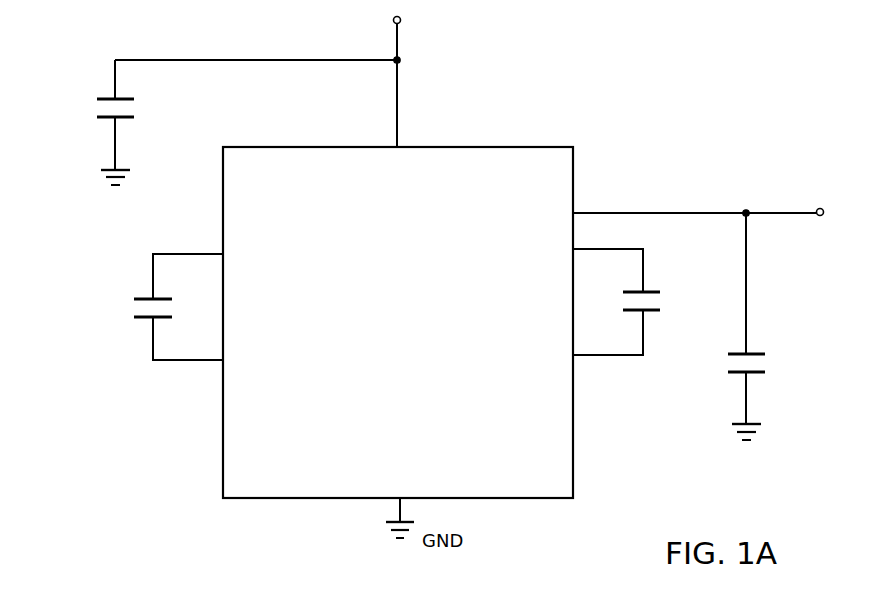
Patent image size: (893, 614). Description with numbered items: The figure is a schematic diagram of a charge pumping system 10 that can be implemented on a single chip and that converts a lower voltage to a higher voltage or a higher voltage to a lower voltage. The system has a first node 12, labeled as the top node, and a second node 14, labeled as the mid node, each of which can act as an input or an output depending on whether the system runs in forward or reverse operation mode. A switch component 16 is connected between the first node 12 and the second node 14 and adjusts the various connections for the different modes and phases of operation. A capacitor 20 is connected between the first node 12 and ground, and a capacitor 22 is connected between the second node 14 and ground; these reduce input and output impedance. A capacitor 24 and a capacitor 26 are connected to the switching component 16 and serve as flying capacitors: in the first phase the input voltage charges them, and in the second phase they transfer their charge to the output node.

The charge pumping system 10 is at (715, 83).
The first node 12 is at (393, 19).
The second node 14 is at (822, 208).
The switch component 16 is at (545, 147).
The capacitor 20 is at (93, 104).
The capacitor 22 is at (768, 363).
The capacitor 24 is at (130, 303).
The capacitor 26 is at (665, 298).